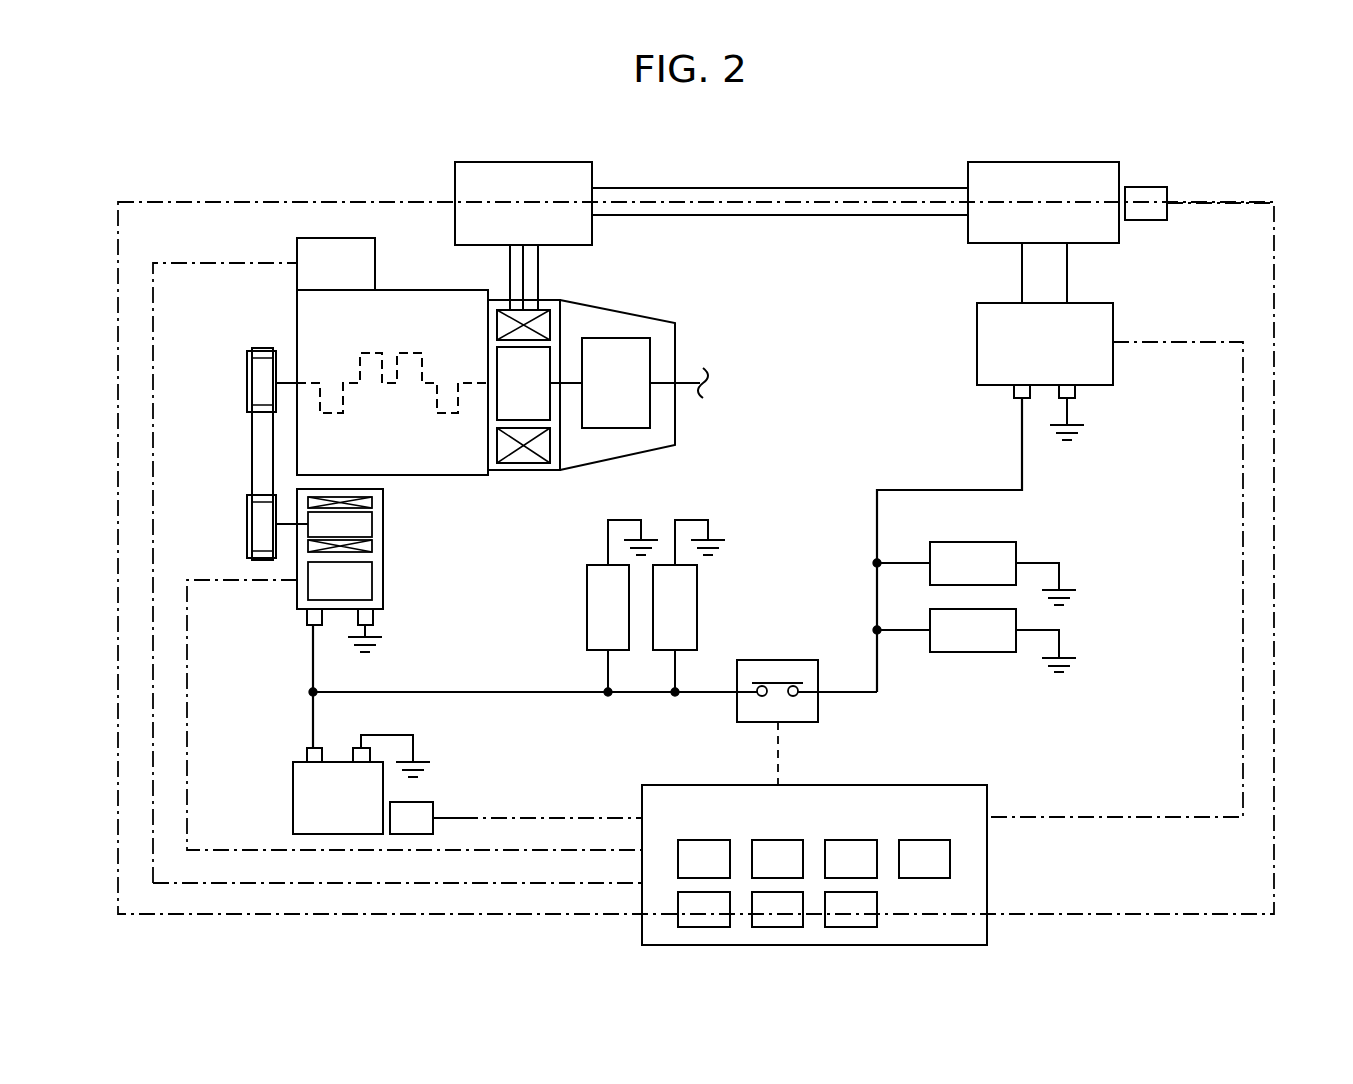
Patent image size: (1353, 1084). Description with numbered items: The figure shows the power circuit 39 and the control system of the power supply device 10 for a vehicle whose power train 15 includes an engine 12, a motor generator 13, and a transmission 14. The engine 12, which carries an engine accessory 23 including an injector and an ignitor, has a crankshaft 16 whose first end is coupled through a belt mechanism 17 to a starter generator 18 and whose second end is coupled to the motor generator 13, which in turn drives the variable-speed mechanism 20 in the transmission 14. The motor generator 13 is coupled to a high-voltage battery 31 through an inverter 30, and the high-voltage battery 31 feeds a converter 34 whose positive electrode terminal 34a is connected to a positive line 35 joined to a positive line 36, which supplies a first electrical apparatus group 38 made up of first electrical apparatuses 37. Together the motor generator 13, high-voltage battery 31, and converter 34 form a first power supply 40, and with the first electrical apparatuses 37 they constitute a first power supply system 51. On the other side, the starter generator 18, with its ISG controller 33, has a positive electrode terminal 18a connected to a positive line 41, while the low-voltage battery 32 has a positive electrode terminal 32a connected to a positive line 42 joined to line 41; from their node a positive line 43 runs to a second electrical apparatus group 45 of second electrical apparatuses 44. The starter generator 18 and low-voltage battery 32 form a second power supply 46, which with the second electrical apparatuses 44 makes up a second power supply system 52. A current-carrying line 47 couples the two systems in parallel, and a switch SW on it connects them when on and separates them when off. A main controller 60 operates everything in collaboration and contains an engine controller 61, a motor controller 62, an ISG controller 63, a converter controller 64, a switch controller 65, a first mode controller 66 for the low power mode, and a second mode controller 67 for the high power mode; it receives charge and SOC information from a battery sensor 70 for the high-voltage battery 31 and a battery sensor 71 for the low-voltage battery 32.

The power supply device 10 is at (155, 168).
The engine 12 is at (297, 330).
The motor generator 13 is at (513, 470).
The transmission 14 is at (643, 450).
The power train 15 is at (692, 300).
The crankshaft 16 is at (384, 387).
The belt mechanism 17 is at (262, 450).
The starter generator 18 is at (383, 530).
The positive electrode terminal 18a is at (307, 620).
The variable-speed mechanism 20 is at (612, 338).
The engine accessory 23 is at (375, 262).
The inverter 30 is at (455, 185).
The high-voltage battery 31 is at (968, 170).
The low-voltage battery 32 is at (293, 815).
The positive electrode terminal 32a is at (307, 752).
The ISG controller 33 is at (372, 585).
The converter 34 is at (977, 332).
The positive electrode terminal 34a is at (1018, 400).
The positive line 35 is at (1023, 462).
The positive line 36 is at (877, 588).
The first electrical apparatus 37 is at (1016, 553).
The first electrical apparatus group 38 is at (982, 652).
The power circuit 39 is at (1240, 150).
The first power supply 40 is at (1110, 150).
The positive line 41 is at (313, 665).
The positive line 42 is at (313, 722).
The positive line 43 is at (483, 695).
The second electrical apparatus 44 is at (587, 633).
The second electrical apparatus group 45 is at (570, 590).
The second power supply 46 is at (280, 685).
The current-carrying line 47 is at (704, 695).
The first power supply system 51 is at (1120, 487).
The second power supply system 52 is at (728, 508).
The switch SW is at (782, 660).
The main controller 60 is at (843, 865).
The engine controller 61 is at (704, 859).
The motor controller 62 is at (777, 859).
The ISG controller 63 is at (851, 859).
The converter controller 64 is at (924, 859).
The switch controller 65 is at (704, 909).
The first mode controller 66 is at (777, 909).
The second mode controller 67 is at (851, 909).
The battery sensor 70 is at (1146, 222).
The battery sensor 71 is at (433, 808).